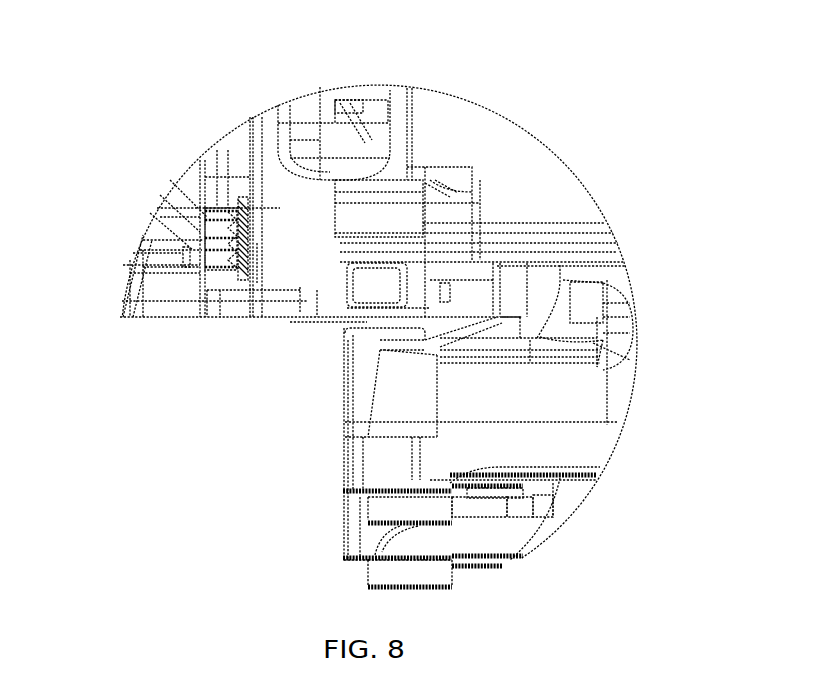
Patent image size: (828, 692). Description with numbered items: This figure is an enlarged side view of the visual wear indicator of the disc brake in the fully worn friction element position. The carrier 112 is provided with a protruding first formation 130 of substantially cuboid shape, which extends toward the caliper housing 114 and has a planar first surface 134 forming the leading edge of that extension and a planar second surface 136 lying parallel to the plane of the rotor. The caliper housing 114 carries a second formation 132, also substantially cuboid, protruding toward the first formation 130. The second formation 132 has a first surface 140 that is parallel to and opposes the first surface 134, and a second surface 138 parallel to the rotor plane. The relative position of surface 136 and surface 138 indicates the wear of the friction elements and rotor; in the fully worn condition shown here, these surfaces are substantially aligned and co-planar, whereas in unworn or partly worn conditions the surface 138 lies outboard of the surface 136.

The caliper housing 114 is at (442, 118).
The second formation 132 is at (383, 283).
The first surface of the second formation 140 is at (380, 308).
The second surface of the second formation 138 is at (345, 295).
The first surface of the first formation 134 is at (367, 322).
The second surface of the first formation 136 is at (348, 375).
The first formation 130 is at (365, 373).
The carrier 112 is at (570, 448).